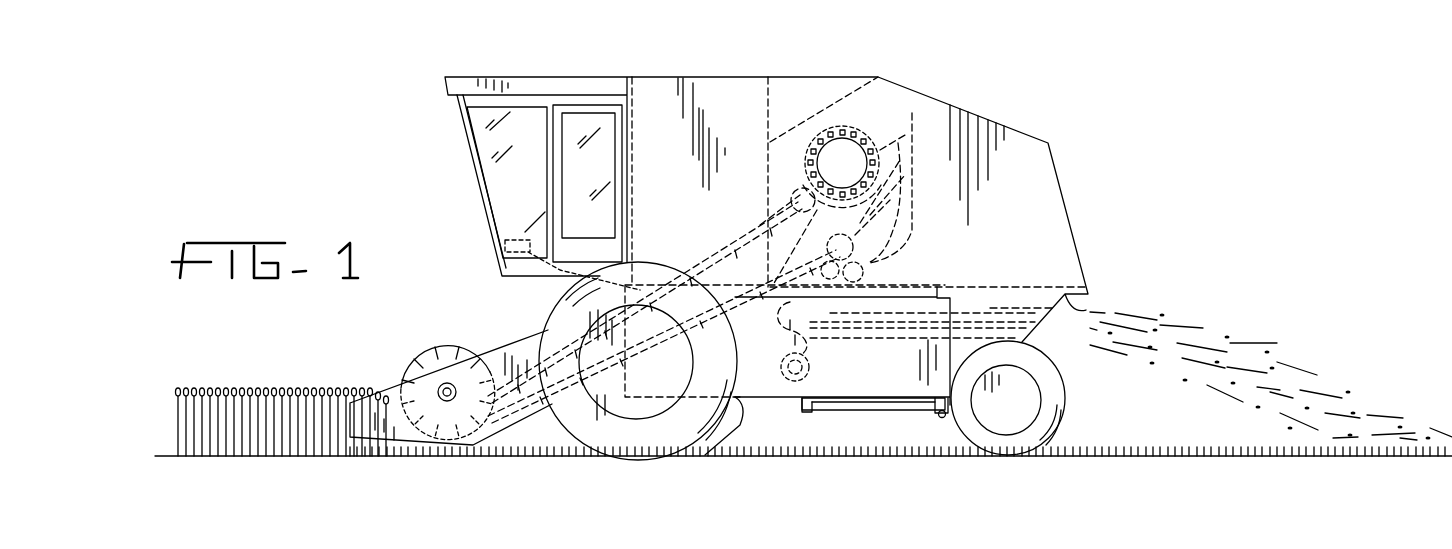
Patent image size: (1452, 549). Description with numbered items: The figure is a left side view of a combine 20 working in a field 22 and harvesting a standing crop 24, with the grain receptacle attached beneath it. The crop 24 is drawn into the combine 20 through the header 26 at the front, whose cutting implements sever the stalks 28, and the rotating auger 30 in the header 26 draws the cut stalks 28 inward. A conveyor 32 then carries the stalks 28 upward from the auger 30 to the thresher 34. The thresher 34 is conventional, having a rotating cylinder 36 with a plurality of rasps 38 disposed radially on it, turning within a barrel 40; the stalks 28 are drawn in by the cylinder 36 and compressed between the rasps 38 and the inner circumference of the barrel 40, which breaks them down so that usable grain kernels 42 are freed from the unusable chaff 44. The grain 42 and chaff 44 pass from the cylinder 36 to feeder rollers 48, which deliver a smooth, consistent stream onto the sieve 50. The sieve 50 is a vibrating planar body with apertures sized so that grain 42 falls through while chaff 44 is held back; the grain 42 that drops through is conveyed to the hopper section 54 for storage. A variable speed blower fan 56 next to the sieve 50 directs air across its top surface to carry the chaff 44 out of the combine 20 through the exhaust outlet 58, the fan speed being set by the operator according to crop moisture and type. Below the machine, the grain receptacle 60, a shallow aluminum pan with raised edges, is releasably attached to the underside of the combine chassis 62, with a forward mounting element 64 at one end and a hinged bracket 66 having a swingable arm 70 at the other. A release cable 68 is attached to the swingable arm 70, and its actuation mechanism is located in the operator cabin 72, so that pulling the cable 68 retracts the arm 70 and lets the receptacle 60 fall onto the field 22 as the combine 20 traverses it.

The combine 20 is at (1126, 139).
The field 22 is at (165, 458).
The crop 24 is at (176, 415).
The header 26 is at (393, 427).
The stalks 28 is at (252, 397).
The auger 30 is at (447, 345).
The conveyor 32 is at (730, 240).
The thresher 34 is at (866, 126).
The rotating cylinder 36 is at (810, 147).
The rasps 38 is at (853, 128).
The barrel 40 is at (829, 134).
The grain kernels 42 is at (1227, 335).
The chaff 44 is at (1187, 327).
The feeder rollers 48 is at (890, 258).
The sieve 50 is at (838, 335).
The hopper section 54 is at (675, 95).
The blower fan 56 is at (793, 380).
The exhaust outlet 58 is at (1086, 306).
The grain receptacle 60 is at (866, 410).
The combine chassis 62 is at (705, 446).
The sieve front support 64 is at (803, 410).
The hinged bracket 66 is at (946, 420).
The release cable 68 is at (937, 293).
The swingable arm 70 is at (944, 417).
The operator cabin 72 is at (492, 148).